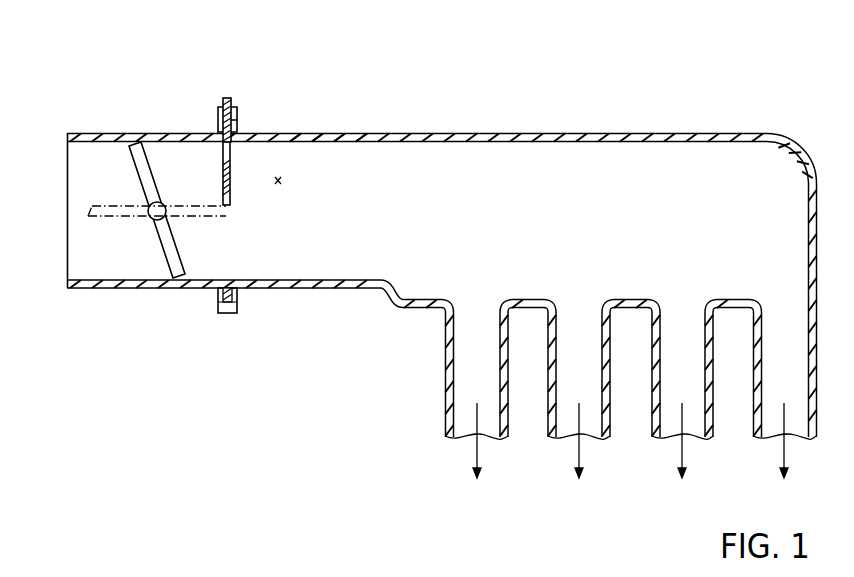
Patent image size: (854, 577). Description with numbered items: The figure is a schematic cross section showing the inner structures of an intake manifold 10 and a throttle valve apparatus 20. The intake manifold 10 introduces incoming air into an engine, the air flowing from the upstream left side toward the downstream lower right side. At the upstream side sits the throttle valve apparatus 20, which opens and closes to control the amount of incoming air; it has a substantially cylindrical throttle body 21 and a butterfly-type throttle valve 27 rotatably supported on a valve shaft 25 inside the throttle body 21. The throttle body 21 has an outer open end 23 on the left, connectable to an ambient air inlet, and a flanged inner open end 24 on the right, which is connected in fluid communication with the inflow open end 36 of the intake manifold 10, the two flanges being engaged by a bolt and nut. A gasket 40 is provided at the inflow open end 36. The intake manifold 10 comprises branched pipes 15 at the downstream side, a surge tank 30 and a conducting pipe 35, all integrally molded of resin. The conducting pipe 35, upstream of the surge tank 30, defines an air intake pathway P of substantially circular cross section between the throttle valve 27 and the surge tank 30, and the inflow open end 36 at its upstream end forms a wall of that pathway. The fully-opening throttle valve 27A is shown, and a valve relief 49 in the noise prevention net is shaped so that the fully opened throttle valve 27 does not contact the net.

The intake manifold 10 is at (623, 86).
The branched pipes 15 is at (754, 400).
The throttle valve apparatus 20 is at (124, 103).
The throttle body 21 is at (100, 136).
The outer open end 23 is at (66, 272).
The inner open end 24 is at (224, 131).
The valve shaft 25 is at (151, 218).
The throttle valve 27 is at (170, 256).
The fully-opening throttle valve 27A is at (108, 210).
The surge tank 30 is at (653, 193).
The conducting pipe 35 is at (320, 133).
The inflow open end 36 is at (239, 278).
The gasket 40 is at (227, 97).
The valve relief 49 is at (233, 190).
The air intake pathway P is at (278, 175).